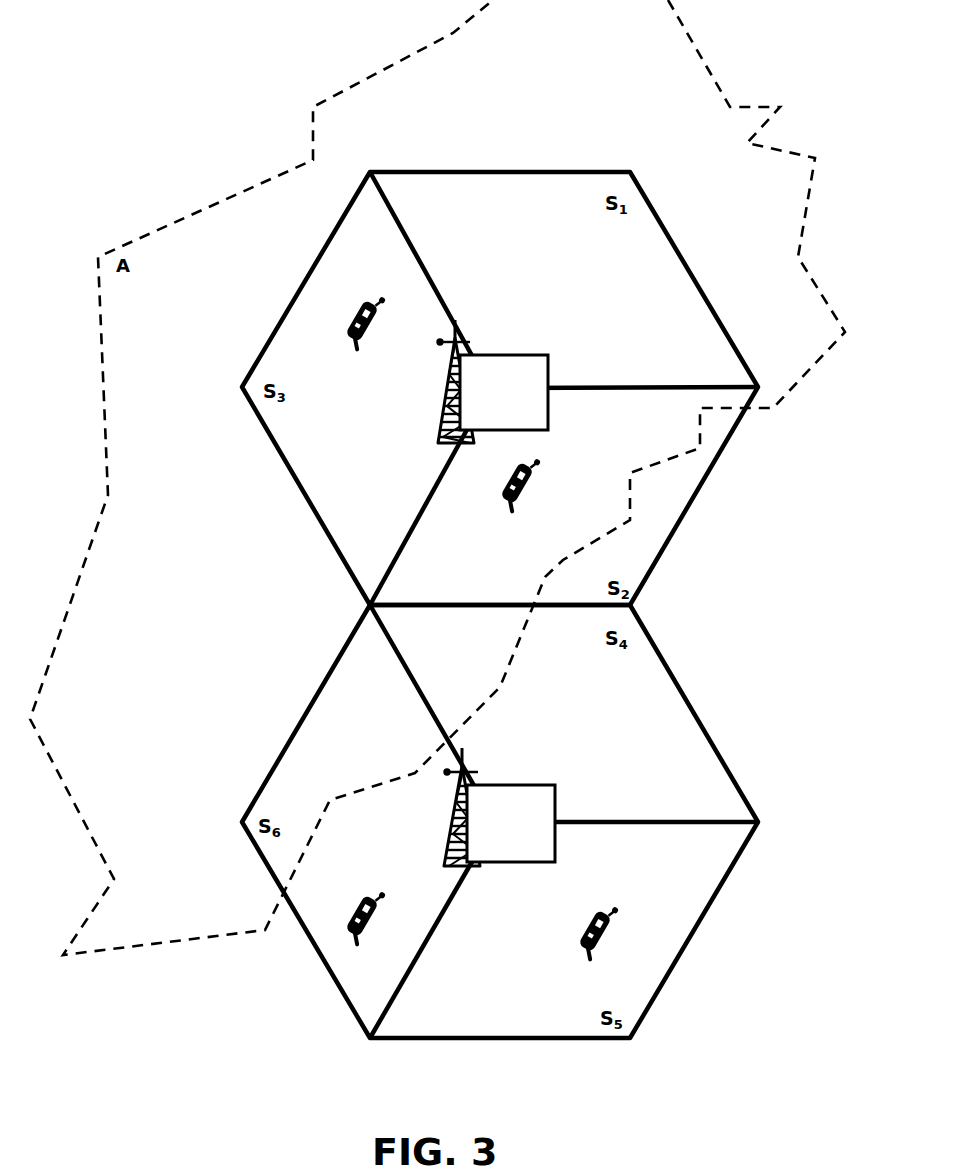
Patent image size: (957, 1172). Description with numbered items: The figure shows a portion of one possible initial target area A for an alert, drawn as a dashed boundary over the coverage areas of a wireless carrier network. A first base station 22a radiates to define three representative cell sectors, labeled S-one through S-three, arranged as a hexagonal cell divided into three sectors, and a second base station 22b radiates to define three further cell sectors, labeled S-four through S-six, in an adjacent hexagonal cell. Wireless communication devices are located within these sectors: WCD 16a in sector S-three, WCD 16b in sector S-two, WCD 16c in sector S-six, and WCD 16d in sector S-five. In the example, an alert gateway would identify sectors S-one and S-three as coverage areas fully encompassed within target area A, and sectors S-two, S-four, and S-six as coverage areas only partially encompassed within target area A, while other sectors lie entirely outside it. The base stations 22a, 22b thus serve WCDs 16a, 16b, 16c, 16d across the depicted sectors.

The wireless communication device 16a is at (376, 322).
The wireless communication device 16b is at (533, 485).
The wireless communication device 16c is at (375, 917).
The wireless communication device 16d is at (609, 932).
The first base station 22a is at (493, 381).
The second base station 22b is at (499, 807).